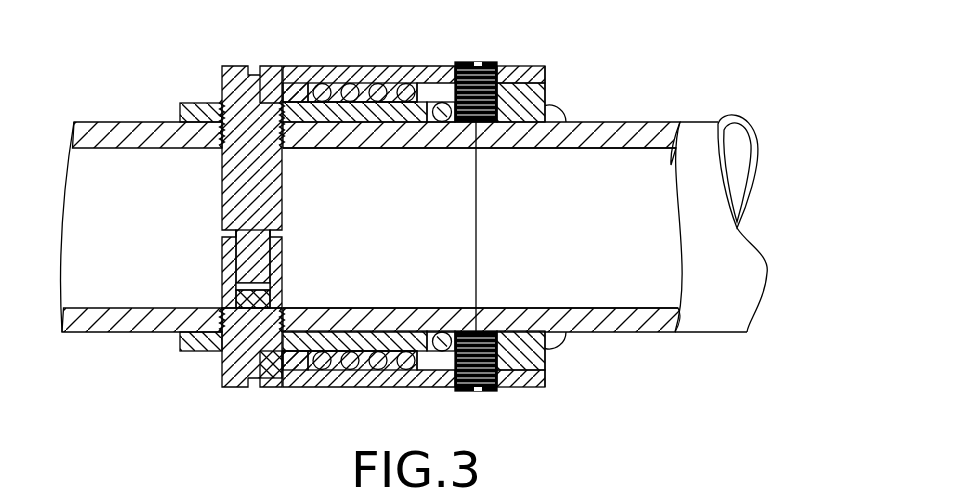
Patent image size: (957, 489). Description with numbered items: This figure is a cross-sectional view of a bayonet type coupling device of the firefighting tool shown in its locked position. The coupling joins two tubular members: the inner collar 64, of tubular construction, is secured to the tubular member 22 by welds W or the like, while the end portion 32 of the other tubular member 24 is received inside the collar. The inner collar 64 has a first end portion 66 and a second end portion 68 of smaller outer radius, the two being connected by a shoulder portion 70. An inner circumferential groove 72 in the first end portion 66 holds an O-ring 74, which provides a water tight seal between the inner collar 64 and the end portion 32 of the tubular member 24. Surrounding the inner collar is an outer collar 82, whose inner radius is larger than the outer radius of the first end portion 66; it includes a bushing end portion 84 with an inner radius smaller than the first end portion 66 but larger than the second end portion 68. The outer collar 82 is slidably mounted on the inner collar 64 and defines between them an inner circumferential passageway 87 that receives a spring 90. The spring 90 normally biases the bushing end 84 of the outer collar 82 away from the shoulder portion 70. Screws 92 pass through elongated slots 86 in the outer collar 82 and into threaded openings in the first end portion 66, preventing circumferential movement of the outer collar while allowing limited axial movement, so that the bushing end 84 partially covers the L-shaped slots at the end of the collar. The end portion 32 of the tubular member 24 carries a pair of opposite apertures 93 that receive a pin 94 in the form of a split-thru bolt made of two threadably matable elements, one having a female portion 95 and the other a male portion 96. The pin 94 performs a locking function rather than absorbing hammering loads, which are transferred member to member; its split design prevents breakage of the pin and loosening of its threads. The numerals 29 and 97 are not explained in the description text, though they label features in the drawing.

The tubular member 22 is at (672, 123).
The tubular member 24 is at (138, 122).
The pipe bore 29 is at (538, 177).
The end portion 32 is at (457, 215).
The inner collar 64 is at (545, 85).
The first end portion 66 is at (537, 98).
The second end portion 68 is at (178, 103).
The shoulder portion 70 is at (418, 92).
The inner circumferential groove 72 is at (455, 360).
The O-ring 74 is at (438, 350).
The outer collar 82 is at (352, 385).
The bushing end portion 84 is at (288, 387).
The elongated slots 86 is at (530, 67).
The inner circumferential passageway 87 is at (363, 92).
The spring 90 is at (352, 85).
The screws 92 is at (472, 63).
The apertures 93 is at (218, 102).
The pin 94 is at (240, 387).
The female portion 95 is at (183, 352).
The male portion 96 is at (243, 265).
The nut 97 is at (233, 80).
The welds W is at (562, 110).